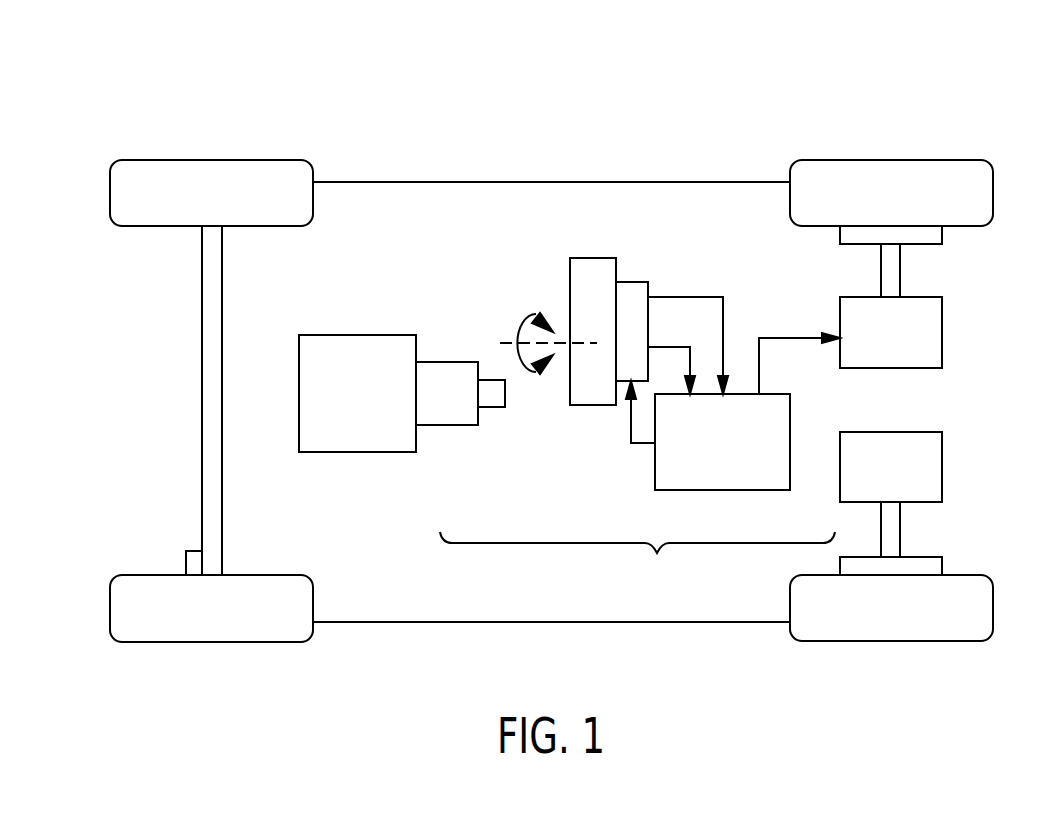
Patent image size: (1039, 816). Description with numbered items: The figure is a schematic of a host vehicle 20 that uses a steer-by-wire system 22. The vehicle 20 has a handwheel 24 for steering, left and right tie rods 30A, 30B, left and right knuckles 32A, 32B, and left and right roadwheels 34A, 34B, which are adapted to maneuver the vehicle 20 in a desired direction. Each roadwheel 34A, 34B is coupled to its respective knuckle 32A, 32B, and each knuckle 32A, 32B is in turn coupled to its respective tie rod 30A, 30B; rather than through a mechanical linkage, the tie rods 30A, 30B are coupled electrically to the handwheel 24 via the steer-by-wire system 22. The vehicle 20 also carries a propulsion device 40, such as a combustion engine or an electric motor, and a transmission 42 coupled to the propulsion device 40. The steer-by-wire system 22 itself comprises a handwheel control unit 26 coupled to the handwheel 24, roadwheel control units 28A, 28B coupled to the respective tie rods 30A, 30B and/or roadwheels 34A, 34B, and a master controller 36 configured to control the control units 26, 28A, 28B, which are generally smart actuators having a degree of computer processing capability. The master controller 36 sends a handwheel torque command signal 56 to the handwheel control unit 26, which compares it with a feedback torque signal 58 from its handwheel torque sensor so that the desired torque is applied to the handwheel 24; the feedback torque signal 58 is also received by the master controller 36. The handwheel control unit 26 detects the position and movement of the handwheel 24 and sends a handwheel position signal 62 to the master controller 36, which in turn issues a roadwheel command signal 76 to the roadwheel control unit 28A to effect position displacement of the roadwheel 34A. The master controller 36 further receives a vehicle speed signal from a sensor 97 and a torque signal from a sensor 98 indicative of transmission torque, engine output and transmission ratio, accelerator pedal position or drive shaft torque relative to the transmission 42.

The host vehicle 20 is at (848, 92).
The steer-by-wire system 22 is at (637, 564).
The handwheel 24 is at (593, 258).
The handwheel control unit 26 is at (630, 285).
The roadwheel control unit 28A is at (937, 330).
The roadwheel control unit 28B is at (938, 468).
The tie rod 30A is at (897, 262).
The tie rod 30B is at (897, 533).
The knuckle 32A is at (845, 235).
The knuckle 32B is at (935, 565).
The roadwheel 34A is at (895, 165).
The roadwheel 34B is at (890, 635).
The master controller 36 is at (700, 492).
The propulsion device 40 is at (360, 340).
The transmission 42 is at (446, 367).
The handwheel torque command signal 56 is at (645, 447).
The feedback torque signal 58 is at (662, 345).
The handwheel position signal 62 is at (725, 312).
The roadwheel command signal 76 is at (792, 342).
The sensor 97 is at (194, 558).
The sensor 98 is at (490, 403).